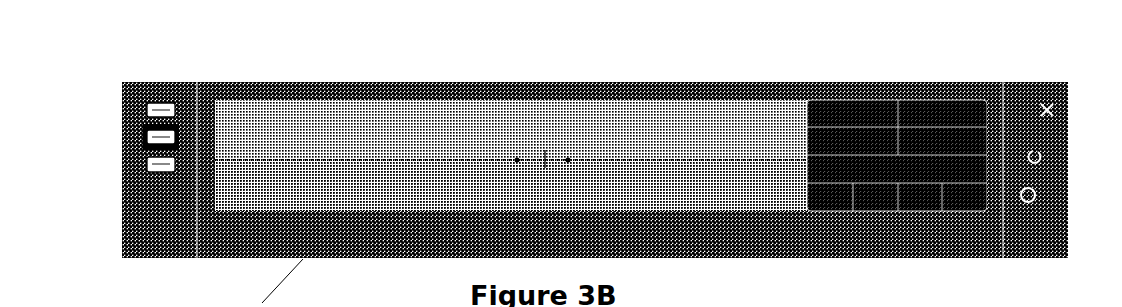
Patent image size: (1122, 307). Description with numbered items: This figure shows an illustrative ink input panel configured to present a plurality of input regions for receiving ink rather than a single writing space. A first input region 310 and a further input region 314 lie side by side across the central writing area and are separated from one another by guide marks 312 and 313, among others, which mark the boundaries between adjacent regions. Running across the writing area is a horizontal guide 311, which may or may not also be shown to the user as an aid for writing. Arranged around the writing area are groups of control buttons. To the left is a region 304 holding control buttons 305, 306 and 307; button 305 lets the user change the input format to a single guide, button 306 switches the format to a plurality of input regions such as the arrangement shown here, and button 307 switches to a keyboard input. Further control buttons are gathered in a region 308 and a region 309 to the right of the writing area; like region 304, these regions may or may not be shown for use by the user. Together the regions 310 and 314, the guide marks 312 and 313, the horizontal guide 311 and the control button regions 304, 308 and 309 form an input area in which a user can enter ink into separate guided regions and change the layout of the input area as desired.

The region 304 is at (124, 72).
The control button 305 is at (122, 101).
The control button 306 is at (122, 128).
The control button 307 is at (122, 154).
The region 308 is at (804, 72).
The region 309 is at (998, 72).
The input region 310 is at (415, 128).
The horizontal guide 311 is at (480, 183).
The guide mark 312 is at (517, 155).
The guide mark 313 is at (568, 155).
The input region 314 is at (545, 150).